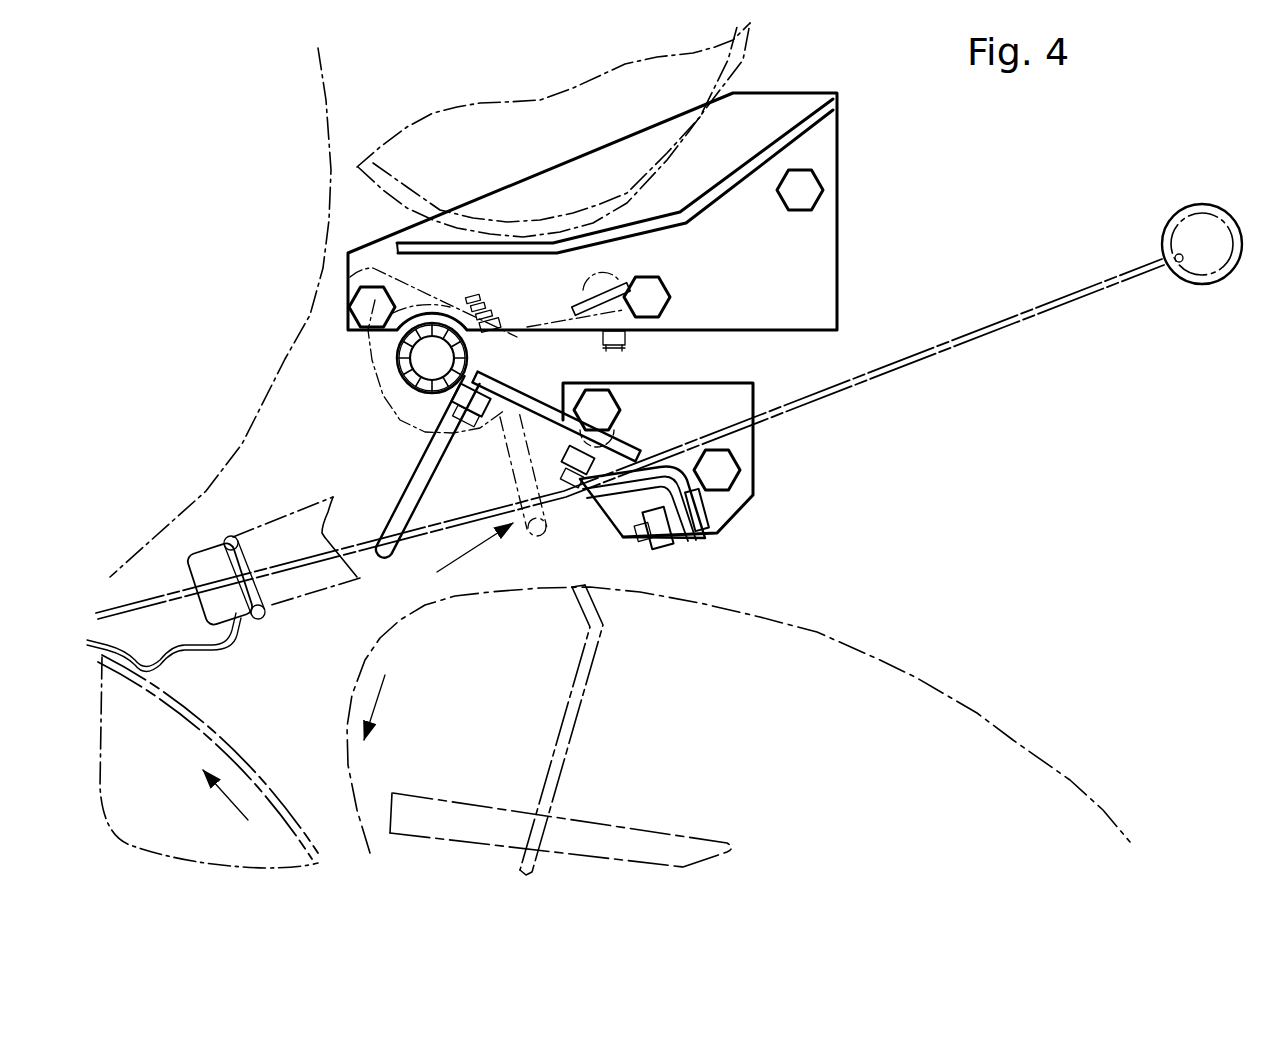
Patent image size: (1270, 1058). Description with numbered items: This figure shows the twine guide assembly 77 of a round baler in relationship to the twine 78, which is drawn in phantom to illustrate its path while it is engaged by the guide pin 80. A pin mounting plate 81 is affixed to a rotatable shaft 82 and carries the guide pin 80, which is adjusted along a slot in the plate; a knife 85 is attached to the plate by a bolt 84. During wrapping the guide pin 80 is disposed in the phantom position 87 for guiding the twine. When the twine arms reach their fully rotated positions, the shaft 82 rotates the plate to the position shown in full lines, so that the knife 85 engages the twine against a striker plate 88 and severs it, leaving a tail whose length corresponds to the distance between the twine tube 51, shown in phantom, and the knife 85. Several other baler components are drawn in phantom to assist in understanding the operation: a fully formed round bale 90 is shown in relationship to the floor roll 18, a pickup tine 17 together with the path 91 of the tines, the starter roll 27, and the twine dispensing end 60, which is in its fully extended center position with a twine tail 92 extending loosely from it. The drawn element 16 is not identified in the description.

The sill 16 is at (647, 820).
The pickup tine 17 is at (580, 687).
The floor roll 18 is at (184, 790).
The starter roll 27 is at (457, 152).
The twine tube 51 is at (1216, 289).
The twine dispensing end 60 is at (305, 612).
The twine guide assembly 77 is at (882, 237).
The twine 78 is at (913, 363).
The guide pin 80 is at (420, 477).
The pin mounting plate 81 is at (537, 395).
The rotatable shaft 82 is at (385, 397).
The bolt 84 is at (573, 483).
The knife 85 is at (627, 450).
The phantom position 87 is at (455, 557).
The striker plate 88 is at (690, 543).
The round bale 90 is at (199, 480).
The path of tines 91 is at (998, 760).
The twine tail 92 is at (208, 656).